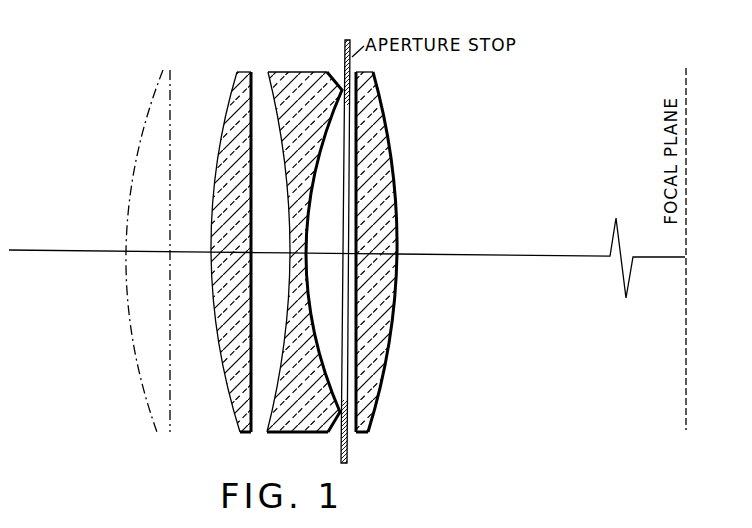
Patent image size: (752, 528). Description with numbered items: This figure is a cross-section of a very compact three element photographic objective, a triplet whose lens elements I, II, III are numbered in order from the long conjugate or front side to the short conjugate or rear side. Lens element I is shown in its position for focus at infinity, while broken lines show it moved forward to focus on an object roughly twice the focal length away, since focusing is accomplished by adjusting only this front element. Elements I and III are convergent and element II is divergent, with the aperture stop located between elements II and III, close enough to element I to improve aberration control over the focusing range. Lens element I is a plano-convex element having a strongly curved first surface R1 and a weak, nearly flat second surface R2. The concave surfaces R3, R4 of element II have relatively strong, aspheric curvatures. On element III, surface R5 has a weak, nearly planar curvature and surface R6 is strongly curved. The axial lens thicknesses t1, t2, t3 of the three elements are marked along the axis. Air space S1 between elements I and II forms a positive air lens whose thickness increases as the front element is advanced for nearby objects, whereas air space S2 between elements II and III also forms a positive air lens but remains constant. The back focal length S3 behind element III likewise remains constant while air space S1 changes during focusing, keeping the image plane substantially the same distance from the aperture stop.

The lens element I is at (221, 249).
The lens element II is at (304, 250).
The lens element III is at (385, 265).
The first surface R1 is at (233, 97).
The second surface R2 is at (253, 93).
The concave surface R3 is at (273, 100).
The concave surface R4 is at (336, 118).
The surface R5 is at (357, 157).
The surface R6 is at (393, 150).
The axial lens thickness t1 is at (213, 237).
The axial lens thickness t2 is at (287, 237).
The axial lens thickness t3 is at (375, 253).
The air space S1 is at (278, 256).
The air space S2 is at (323, 252).
The back focal length S3 is at (533, 256).